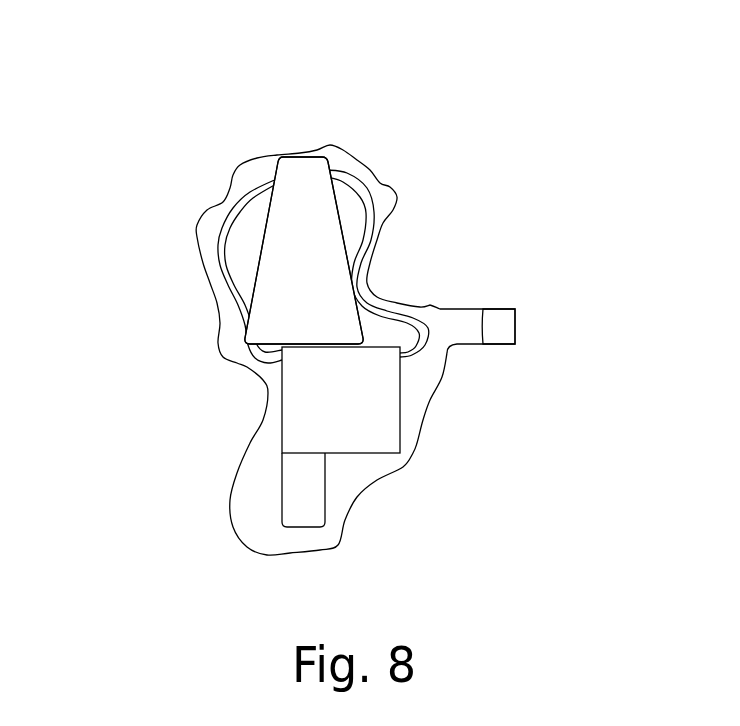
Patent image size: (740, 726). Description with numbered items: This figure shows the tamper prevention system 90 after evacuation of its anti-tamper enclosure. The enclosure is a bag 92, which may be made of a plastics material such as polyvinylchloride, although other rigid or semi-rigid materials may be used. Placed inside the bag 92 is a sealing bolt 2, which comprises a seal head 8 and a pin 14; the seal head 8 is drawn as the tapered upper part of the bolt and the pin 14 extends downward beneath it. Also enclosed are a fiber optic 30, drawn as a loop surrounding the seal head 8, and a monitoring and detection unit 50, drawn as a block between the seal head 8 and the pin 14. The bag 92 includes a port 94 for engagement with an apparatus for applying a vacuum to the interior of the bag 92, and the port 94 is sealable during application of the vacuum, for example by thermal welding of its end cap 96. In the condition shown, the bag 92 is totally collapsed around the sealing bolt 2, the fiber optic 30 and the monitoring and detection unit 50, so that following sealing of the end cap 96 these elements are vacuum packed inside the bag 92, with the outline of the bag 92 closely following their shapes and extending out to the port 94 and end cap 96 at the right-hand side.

The tamper prevention system 90 is at (432, 158).
The sealing bolt 2 is at (333, 202).
The seal head 8 is at (267, 268).
The fiber optic 30 is at (215, 230).
The end cap 96 is at (503, 320).
The port 94 is at (468, 347).
The monitoring and detection unit 50 is at (380, 422).
The bag 92 is at (387, 480).
The pin 14 is at (308, 513).